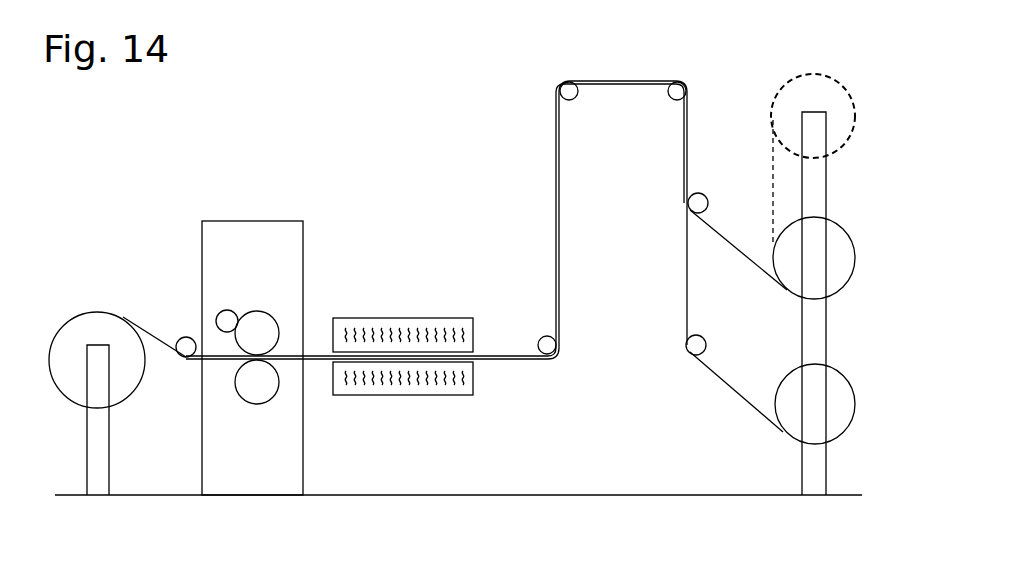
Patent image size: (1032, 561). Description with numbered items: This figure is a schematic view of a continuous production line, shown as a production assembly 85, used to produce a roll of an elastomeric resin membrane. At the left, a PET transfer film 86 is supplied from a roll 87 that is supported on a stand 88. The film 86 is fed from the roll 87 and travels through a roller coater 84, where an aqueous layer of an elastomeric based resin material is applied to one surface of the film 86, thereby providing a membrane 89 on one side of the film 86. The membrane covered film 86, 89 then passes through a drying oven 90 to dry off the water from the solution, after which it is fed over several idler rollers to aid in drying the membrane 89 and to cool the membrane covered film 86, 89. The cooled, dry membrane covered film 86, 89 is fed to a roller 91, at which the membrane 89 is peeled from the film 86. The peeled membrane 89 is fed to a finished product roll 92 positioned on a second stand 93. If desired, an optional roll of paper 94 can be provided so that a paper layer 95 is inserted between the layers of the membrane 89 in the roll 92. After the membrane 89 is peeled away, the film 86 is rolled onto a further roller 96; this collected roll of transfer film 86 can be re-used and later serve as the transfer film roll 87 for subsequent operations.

The roller coater 84 is at (262, 268).
The production assembly 85 is at (381, 170).
The PET transfer film 86 is at (158, 332).
The roll 87 is at (98, 322).
The stand 88 is at (97, 437).
The membrane 89 is at (315, 353).
The drying oven 90 is at (390, 327).
The roller 91 is at (688, 203).
The finished product roll 92 is at (843, 257).
The second stand 93 is at (812, 477).
The roll of paper 94 is at (847, 118).
The paper layer 95 is at (772, 177).
The further roller 96 is at (845, 398).